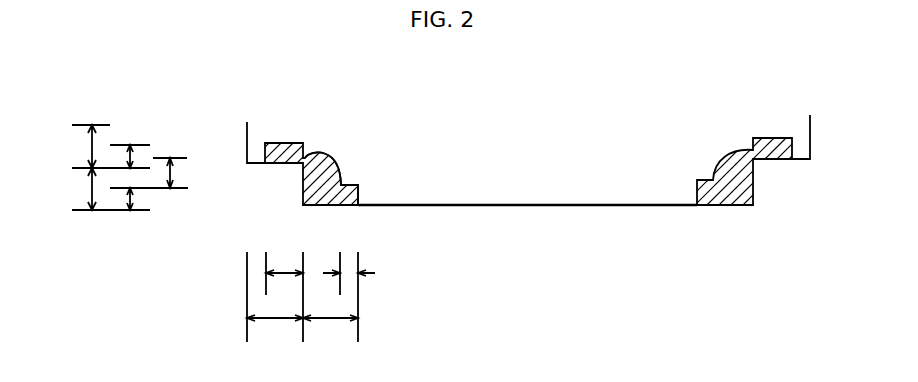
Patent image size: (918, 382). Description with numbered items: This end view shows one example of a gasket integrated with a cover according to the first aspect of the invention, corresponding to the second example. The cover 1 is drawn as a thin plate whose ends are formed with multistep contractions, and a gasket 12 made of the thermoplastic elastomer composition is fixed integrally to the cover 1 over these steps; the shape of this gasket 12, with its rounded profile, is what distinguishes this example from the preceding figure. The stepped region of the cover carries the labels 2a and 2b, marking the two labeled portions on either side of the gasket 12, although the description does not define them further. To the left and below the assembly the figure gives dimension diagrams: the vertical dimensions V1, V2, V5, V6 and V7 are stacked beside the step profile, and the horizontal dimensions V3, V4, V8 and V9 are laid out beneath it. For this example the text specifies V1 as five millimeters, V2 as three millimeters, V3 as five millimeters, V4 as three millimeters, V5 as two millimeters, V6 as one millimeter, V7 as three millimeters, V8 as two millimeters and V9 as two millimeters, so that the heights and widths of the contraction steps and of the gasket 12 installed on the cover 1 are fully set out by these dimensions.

The cover 1 is at (530, 203).
The upper step portion of bank 2a is at (257, 162).
The gasket 12 is at (308, 168).
The lower step portion of bank 2b is at (363, 182).
The dimension V1 is at (85, 144).
The dimension V2 is at (85, 188).
The dimension V3 is at (280, 322).
The dimension V4 is at (328, 322).
The dimension V5 is at (133, 157).
The dimension V6 is at (137, 198).
The dimension V7 is at (172, 172).
The dimension V8 is at (285, 268).
The dimension V9 is at (347, 268).